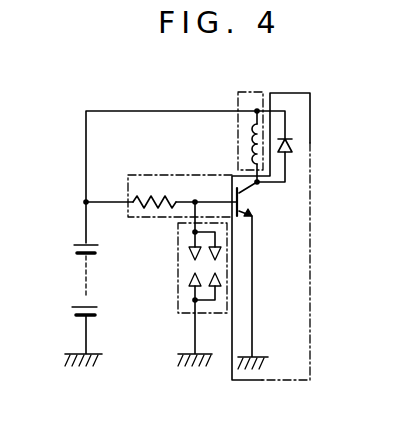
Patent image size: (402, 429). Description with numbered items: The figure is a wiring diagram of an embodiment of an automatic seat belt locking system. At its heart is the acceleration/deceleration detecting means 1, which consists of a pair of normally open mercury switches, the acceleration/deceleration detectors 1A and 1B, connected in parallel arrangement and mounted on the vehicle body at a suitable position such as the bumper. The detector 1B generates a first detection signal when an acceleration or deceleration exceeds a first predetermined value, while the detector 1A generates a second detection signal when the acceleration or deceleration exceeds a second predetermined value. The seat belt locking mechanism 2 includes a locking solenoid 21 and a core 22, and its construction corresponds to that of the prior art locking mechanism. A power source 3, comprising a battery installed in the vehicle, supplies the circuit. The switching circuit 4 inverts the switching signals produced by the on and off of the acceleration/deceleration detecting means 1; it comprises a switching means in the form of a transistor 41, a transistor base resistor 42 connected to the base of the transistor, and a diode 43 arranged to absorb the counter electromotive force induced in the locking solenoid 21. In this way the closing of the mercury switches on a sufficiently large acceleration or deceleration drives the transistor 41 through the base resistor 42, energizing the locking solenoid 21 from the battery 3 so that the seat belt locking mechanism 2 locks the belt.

The acceleration/deceleration detecting means 1 is at (219, 284).
The acceleration/deceleration detector 1A is at (192, 266).
The acceleration/deceleration detector 1B is at (210, 263).
The seat belt locking mechanism 2 is at (233, 116).
The locking solenoid 21 is at (250, 130).
The core 22 is at (252, 162).
The power source 3 is at (80, 282).
The switching circuit 4 is at (312, 214).
The transistor 41 is at (250, 199).
The transistor base resistor 42 is at (157, 200).
The diode 43 is at (295, 145).